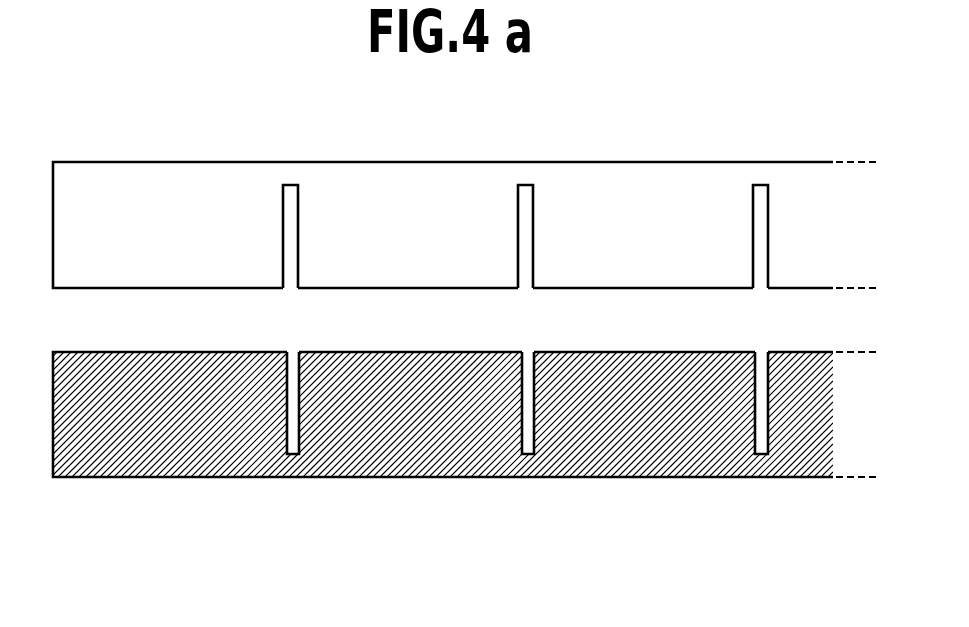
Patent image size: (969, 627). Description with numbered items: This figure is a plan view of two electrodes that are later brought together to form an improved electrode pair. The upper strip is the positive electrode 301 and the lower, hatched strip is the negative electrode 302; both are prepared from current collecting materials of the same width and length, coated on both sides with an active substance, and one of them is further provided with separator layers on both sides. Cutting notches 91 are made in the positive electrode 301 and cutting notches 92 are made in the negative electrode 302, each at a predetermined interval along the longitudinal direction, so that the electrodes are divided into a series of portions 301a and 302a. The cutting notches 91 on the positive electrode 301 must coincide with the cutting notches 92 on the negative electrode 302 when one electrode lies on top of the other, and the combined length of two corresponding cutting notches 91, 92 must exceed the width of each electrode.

The positive electrode 301 is at (726, 150).
The portions of the positive electrode 301a is at (347, 270).
The cutting notches 91 is at (526, 195).
The negative electrode 302 is at (776, 496).
The portions of the negative electrode 302a is at (233, 438).
The cutting notches 92 is at (527, 362).